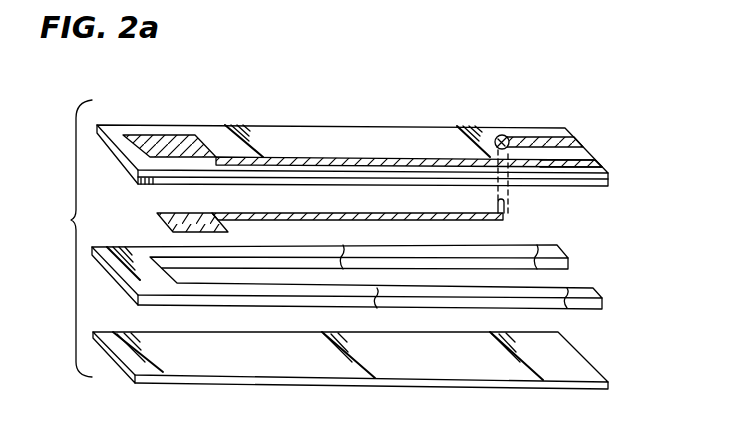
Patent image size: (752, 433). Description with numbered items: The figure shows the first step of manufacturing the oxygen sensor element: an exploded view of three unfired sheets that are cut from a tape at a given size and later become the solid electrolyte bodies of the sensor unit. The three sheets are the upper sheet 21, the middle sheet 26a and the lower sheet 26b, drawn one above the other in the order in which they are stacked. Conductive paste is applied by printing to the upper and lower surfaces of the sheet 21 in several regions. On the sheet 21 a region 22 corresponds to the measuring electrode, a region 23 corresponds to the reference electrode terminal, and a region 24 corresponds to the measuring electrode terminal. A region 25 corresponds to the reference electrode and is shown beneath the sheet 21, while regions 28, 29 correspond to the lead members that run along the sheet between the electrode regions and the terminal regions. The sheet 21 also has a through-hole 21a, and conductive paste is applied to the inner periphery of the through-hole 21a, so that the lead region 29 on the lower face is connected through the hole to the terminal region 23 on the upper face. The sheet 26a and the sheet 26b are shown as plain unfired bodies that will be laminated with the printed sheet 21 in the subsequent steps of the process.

The sheet 21 is at (392, 125).
The through-hole 21a is at (502, 135).
The region corresponding to the measuring electrode 22 is at (168, 140).
The region corresponding to the reference electrode terminal 23 is at (567, 142).
The region corresponding to the measuring electrode terminal 24 is at (597, 162).
The region corresponding to the reference electrode 25 is at (160, 216).
The sheet 26a is at (563, 253).
The sheet 26b is at (585, 367).
The region corresponding to a lead member 28 is at (305, 158).
The region corresponding to a lead member 29 is at (398, 213).